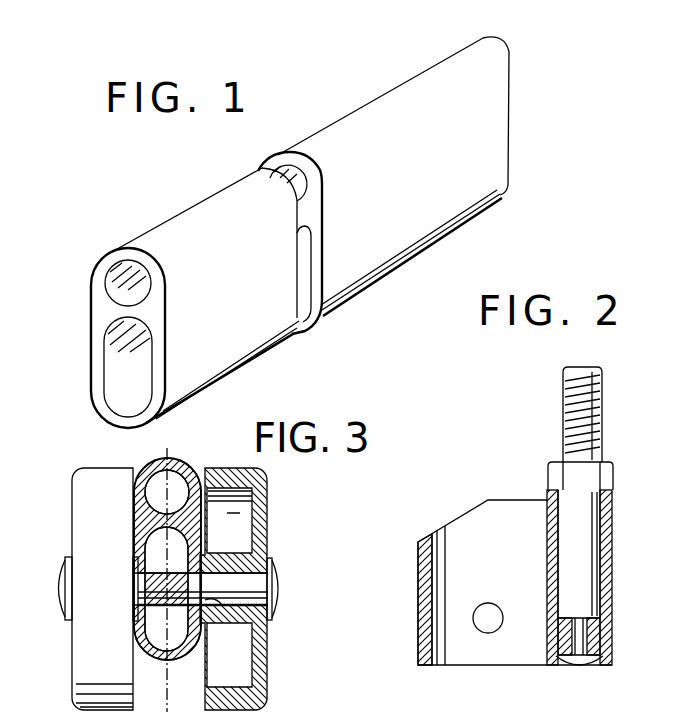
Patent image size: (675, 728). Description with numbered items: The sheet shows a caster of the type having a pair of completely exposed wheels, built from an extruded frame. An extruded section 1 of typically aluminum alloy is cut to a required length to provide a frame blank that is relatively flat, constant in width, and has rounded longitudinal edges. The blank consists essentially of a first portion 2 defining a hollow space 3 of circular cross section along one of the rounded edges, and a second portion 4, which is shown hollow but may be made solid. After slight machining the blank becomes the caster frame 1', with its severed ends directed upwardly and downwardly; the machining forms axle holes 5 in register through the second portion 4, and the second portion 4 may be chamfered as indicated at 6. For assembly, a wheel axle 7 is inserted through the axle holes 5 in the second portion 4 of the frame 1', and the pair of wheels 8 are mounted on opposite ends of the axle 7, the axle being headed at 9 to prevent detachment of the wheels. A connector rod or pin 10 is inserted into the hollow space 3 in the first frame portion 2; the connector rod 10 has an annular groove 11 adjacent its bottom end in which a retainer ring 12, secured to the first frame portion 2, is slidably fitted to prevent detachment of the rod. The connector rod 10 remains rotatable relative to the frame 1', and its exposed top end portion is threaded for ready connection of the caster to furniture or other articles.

In FIG. 1, the extruded section 1 is at (383, 181).
In FIG. 3, the caster frame 1' is at (209, 430).
In FIG. 2, the caster frame 1' is at (483, 470).
In FIG. 1, the first portion 2 is at (150, 262).
In FIG. 3, the first portion 2 is at (160, 467).
In FIG. 2, the first portion 2 is at (613, 550).
In FIG. 1, the hollow space 3 is at (108, 287).
In FIG. 3, the hollow space 3 is at (150, 486).
In FIG. 2, the hollow space 3 is at (599, 525).
In FIG. 1, the second portion 4 is at (102, 376).
In FIG. 3, the second portion 4 is at (145, 647).
In FIG. 2, the second portion 4 is at (447, 525).
In FIG. 3, the axle holes 5 is at (207, 603).
In FIG. 2, the axle holes 5 is at (488, 625).
In FIG. 2, the chamfer 6 is at (463, 545).
In FIG. 3, the wheel axle 7 is at (253, 582).
In FIG. 3, the wheels 8 is at (70, 678).
In FIG. 3, the axle head 9 is at (55, 590).
In FIG. 2, the connector rod 10 is at (582, 592).
In FIG. 2, the annular groove 11 is at (575, 628).
In FIG. 2, the retainer ring 12 is at (602, 637).